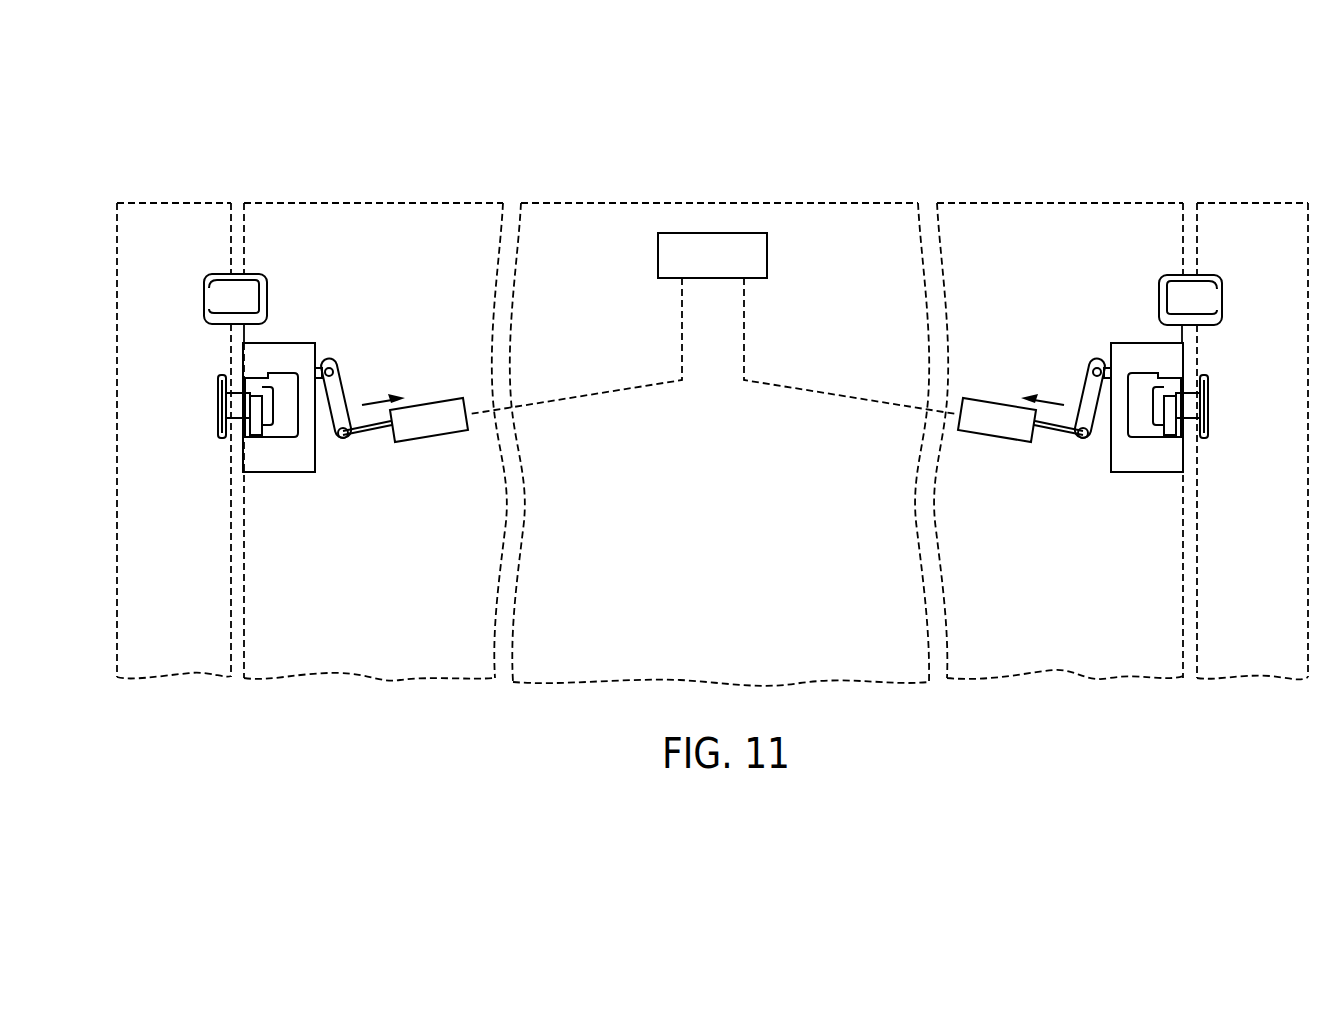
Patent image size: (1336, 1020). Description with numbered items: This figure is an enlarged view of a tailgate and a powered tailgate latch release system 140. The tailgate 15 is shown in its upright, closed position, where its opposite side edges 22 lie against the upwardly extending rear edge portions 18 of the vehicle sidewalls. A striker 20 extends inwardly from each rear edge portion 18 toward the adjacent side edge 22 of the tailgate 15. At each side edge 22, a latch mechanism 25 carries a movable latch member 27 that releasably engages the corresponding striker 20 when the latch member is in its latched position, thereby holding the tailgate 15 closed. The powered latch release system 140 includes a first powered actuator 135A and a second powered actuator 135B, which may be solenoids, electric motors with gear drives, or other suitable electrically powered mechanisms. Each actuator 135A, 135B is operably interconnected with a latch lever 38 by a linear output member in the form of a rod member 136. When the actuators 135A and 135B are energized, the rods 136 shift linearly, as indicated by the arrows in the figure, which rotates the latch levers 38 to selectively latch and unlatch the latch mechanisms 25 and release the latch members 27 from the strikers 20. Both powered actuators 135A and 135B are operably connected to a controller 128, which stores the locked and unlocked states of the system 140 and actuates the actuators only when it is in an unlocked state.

The powered tailgate latch release system 140 is at (864, 120).
The rear edge portion 18 is at (192, 215).
The tailgate 15 is at (395, 202).
The side edge 22 is at (240, 508).
The controller 128 is at (757, 245).
The latch mechanism 25 is at (300, 457).
The striker 20 is at (238, 412).
The movable latch member 27 is at (255, 427).
The latch lever 38 is at (345, 397).
The rod member 136 is at (366, 437).
The first powered actuator 135A is at (435, 408).
The second powered actuator 135B is at (978, 411).